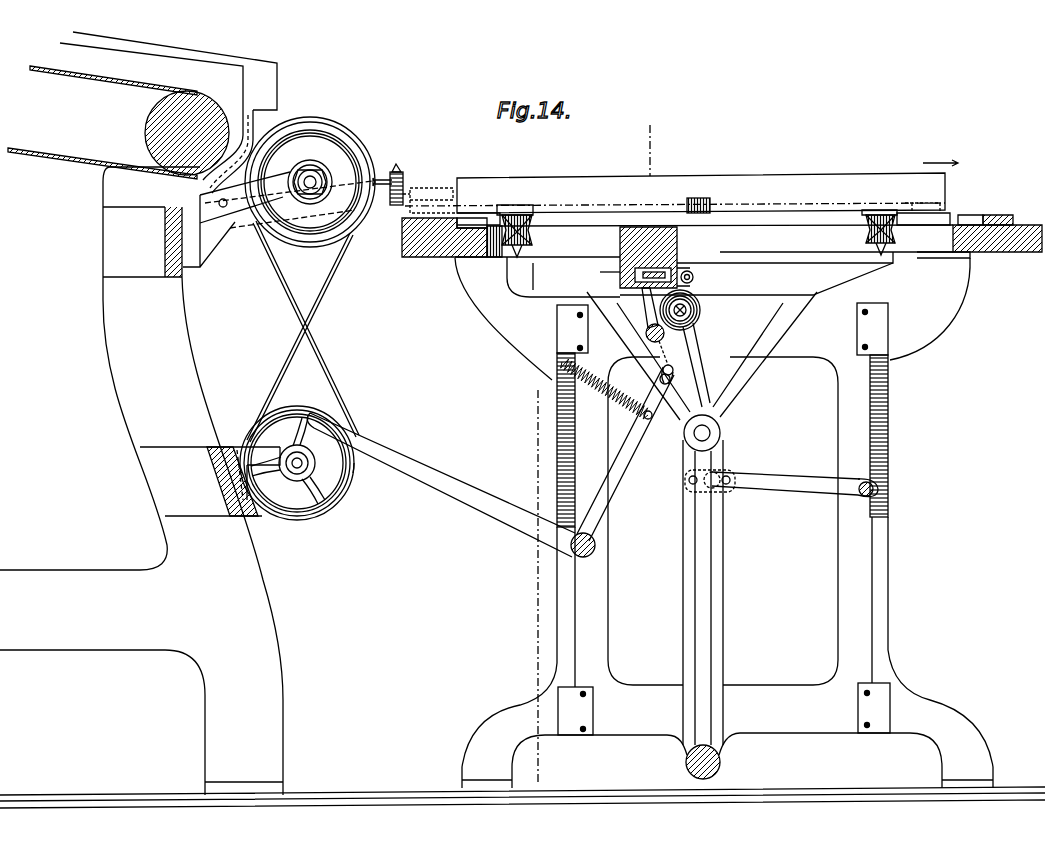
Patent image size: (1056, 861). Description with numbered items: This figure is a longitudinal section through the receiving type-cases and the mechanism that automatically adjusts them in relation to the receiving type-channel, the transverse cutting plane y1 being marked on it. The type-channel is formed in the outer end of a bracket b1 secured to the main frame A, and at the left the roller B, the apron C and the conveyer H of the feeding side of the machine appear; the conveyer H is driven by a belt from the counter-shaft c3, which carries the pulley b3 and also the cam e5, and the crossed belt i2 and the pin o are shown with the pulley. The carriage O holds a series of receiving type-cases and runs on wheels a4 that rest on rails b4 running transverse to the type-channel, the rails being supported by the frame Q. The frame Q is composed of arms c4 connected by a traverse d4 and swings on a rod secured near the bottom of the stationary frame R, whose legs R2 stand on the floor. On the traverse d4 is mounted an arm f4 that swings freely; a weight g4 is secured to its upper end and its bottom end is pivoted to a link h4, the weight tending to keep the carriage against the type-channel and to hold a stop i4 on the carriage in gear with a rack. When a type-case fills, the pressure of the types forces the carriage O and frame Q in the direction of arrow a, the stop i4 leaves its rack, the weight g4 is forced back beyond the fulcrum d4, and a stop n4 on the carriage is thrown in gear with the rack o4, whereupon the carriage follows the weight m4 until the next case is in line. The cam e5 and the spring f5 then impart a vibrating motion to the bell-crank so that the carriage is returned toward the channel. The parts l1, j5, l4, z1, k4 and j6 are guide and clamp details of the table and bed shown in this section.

The main frame A is at (141, 413).
The roller B is at (187, 133).
The apron C is at (128, 92).
The conveyer H is at (320, 122).
The bracket b1 is at (286, 170).
The pivot pin o is at (221, 198).
The crossed belt i2 is at (318, 382).
The counter-shaft c3 is at (297, 463).
The cam e5 is at (306, 470).
The pulley b3 is at (346, 482).
The traverse d4 is at (490, 463).
The carriage O is at (675, 199).
The section line y1 is at (594, 448).
The direction arrow a is at (946, 163).
The post l' l1 is at (394, 177).
The guide j5 is at (412, 194).
The stationary frame R is at (712, 400).
The clamp block l4 is at (452, 236).
The spacer z' z1 is at (476, 220).
The rails b4 is at (697, 236).
The rack o4 is at (997, 226).
The stop n4 is at (768, 244).
The weight m4 is at (655, 257).
The weight g4 is at (686, 273).
The upper clamp k4 is at (698, 210).
The frame Q is at (700, 277).
The stop i4 is at (685, 310).
The bell crank j6 is at (657, 336).
The arm f4 is at (695, 395).
The spring f5 is at (618, 394).
The wheels a4 is at (702, 371).
The arms c4 is at (703, 609).
The link h4 is at (745, 481).
The legs R2 is at (724, 523).